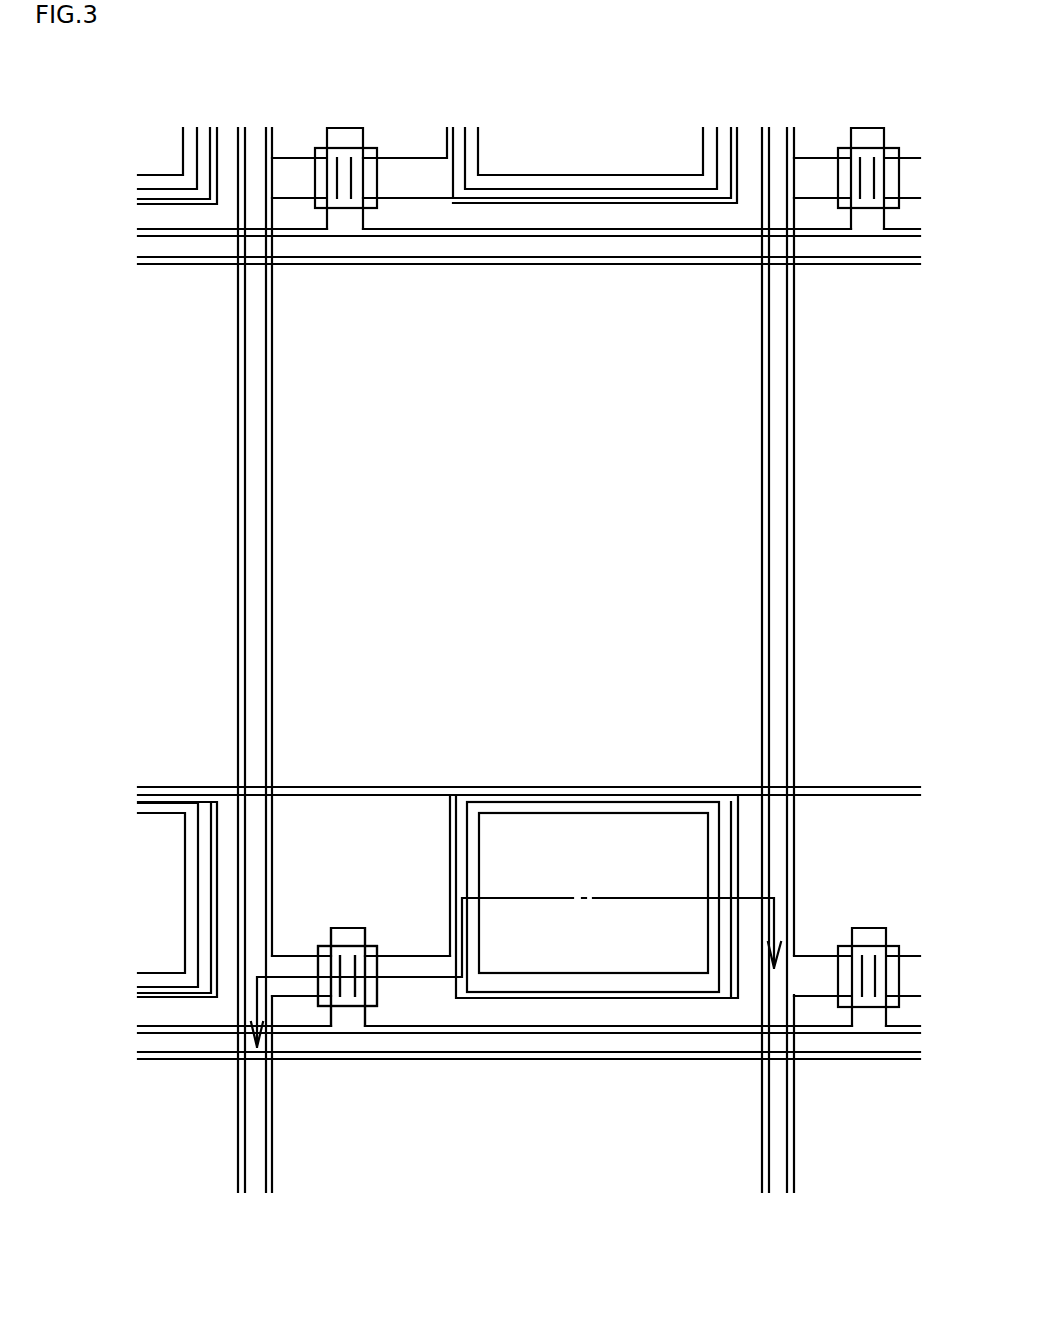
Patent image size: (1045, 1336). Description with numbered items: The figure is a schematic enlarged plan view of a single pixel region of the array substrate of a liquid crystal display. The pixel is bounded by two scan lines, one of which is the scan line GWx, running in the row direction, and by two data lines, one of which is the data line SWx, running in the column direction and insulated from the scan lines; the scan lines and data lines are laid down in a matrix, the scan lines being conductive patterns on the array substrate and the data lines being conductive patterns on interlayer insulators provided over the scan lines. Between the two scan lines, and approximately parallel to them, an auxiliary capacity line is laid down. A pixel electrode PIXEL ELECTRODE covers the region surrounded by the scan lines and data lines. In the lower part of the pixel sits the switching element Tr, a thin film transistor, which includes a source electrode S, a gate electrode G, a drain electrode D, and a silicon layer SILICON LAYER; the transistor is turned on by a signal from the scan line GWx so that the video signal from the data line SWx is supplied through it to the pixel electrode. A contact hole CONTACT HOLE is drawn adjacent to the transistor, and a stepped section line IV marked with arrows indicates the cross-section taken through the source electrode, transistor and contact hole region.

The scan line GWx is at (187, 1042).
The data line SWx is at (257, 1168).
The pixel electrode PIXEL ELECTRODE is at (268, 542).
The contact hole CONTACT HOLE is at (592, 813).
The switching element Tr is at (391, 919).
The gate electrode G is at (348, 929).
The silicon layer SILICON LAYER is at (370, 1000).
The source electrode S is at (302, 987).
The drain electrode D is at (438, 985).
The section line IV- IV is at (520, 972).